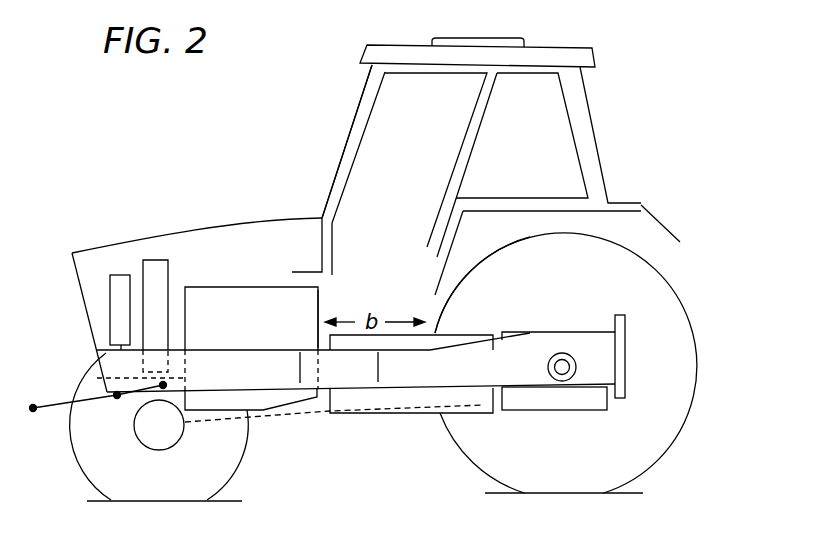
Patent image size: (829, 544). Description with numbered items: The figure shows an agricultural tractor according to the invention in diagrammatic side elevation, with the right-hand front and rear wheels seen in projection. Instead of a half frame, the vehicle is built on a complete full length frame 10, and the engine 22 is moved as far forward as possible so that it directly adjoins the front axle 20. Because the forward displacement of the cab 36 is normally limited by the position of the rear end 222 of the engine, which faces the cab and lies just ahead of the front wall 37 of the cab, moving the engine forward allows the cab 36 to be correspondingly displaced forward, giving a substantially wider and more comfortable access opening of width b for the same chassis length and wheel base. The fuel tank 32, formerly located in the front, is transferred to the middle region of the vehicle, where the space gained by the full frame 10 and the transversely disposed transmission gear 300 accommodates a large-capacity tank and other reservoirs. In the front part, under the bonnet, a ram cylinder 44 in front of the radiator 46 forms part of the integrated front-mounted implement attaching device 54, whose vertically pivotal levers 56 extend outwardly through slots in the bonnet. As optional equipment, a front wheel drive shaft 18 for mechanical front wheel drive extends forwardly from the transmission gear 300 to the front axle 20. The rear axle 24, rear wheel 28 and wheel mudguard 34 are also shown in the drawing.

The full length frame 10 is at (113, 364).
The front wheel drive shaft 18 is at (285, 417).
The front axle 20 is at (176, 443).
The engine 22 is at (225, 323).
The rear end of the engine 222 is at (318, 332).
The rear axle 24 is at (565, 354).
The rear wheel 28 is at (648, 288).
The transversely disposed transmission gear 300 is at (587, 403).
The fuel tank 32 is at (387, 400).
The rear fender 34 is at (457, 288).
The cab 36 is at (338, 152).
The front wall of the cab 37 is at (333, 242).
The ram cylinder 44 is at (114, 287).
The radiator 46 is at (159, 268).
The front implement attachment device 54 is at (627, 352).
The vertically pivotal levers 56 is at (33, 411).